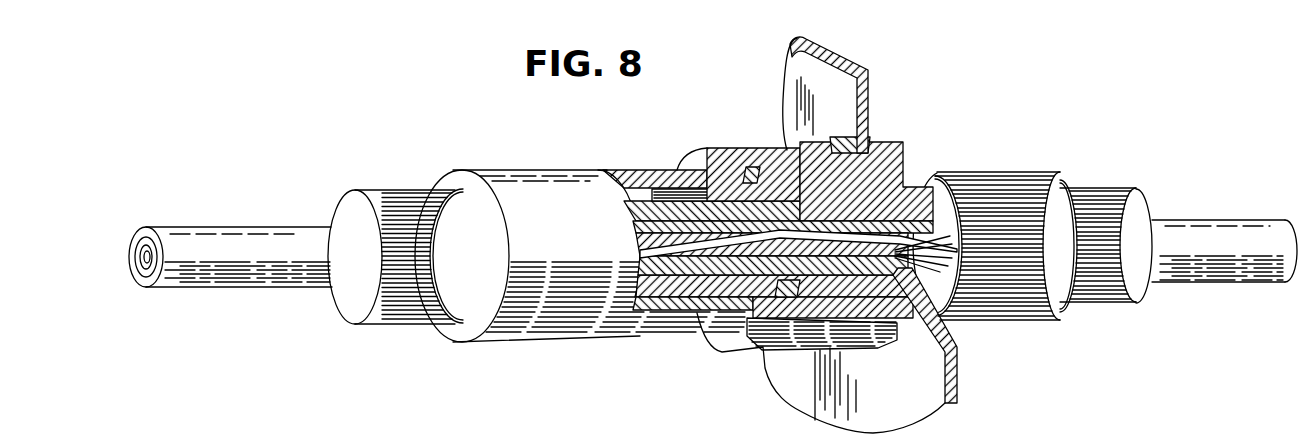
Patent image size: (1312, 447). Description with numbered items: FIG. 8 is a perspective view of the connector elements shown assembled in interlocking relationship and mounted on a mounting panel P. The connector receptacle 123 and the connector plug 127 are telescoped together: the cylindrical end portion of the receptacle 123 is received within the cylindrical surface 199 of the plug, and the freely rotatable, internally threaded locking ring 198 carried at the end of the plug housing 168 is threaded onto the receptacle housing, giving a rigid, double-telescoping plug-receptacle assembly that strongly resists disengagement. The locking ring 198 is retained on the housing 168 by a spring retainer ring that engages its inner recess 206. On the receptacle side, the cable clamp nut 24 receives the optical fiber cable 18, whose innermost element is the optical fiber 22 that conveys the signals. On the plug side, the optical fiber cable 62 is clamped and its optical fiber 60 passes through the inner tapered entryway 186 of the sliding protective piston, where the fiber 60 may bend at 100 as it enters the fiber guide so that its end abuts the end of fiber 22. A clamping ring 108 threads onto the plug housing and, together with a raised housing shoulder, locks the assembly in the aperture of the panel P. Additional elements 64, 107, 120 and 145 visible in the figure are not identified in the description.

The optical fiber cable 18 is at (1200, 262).
The optical fiber 22 is at (937, 260).
The cable clamp nut 24 is at (1117, 191).
The optical fiber 60 is at (700, 258).
The optical fiber cable 62 is at (218, 258).
The coupling nut 64 is at (400, 191).
The bend 100 is at (654, 272).
The shell 107 is at (742, 372).
The clamping ring 108 is at (862, 150).
The panel 120 is at (767, 74).
The connector receptacle 123 is at (987, 150).
The connector plug 127 is at (520, 154).
The ring 145 is at (1030, 173).
The plug housing 168 is at (575, 163).
The inner tapered entryway 186 is at (648, 292).
The locking ring 198 is at (748, 152).
The cylindrical surface 199 is at (718, 188).
The inner recess 206 is at (808, 322).